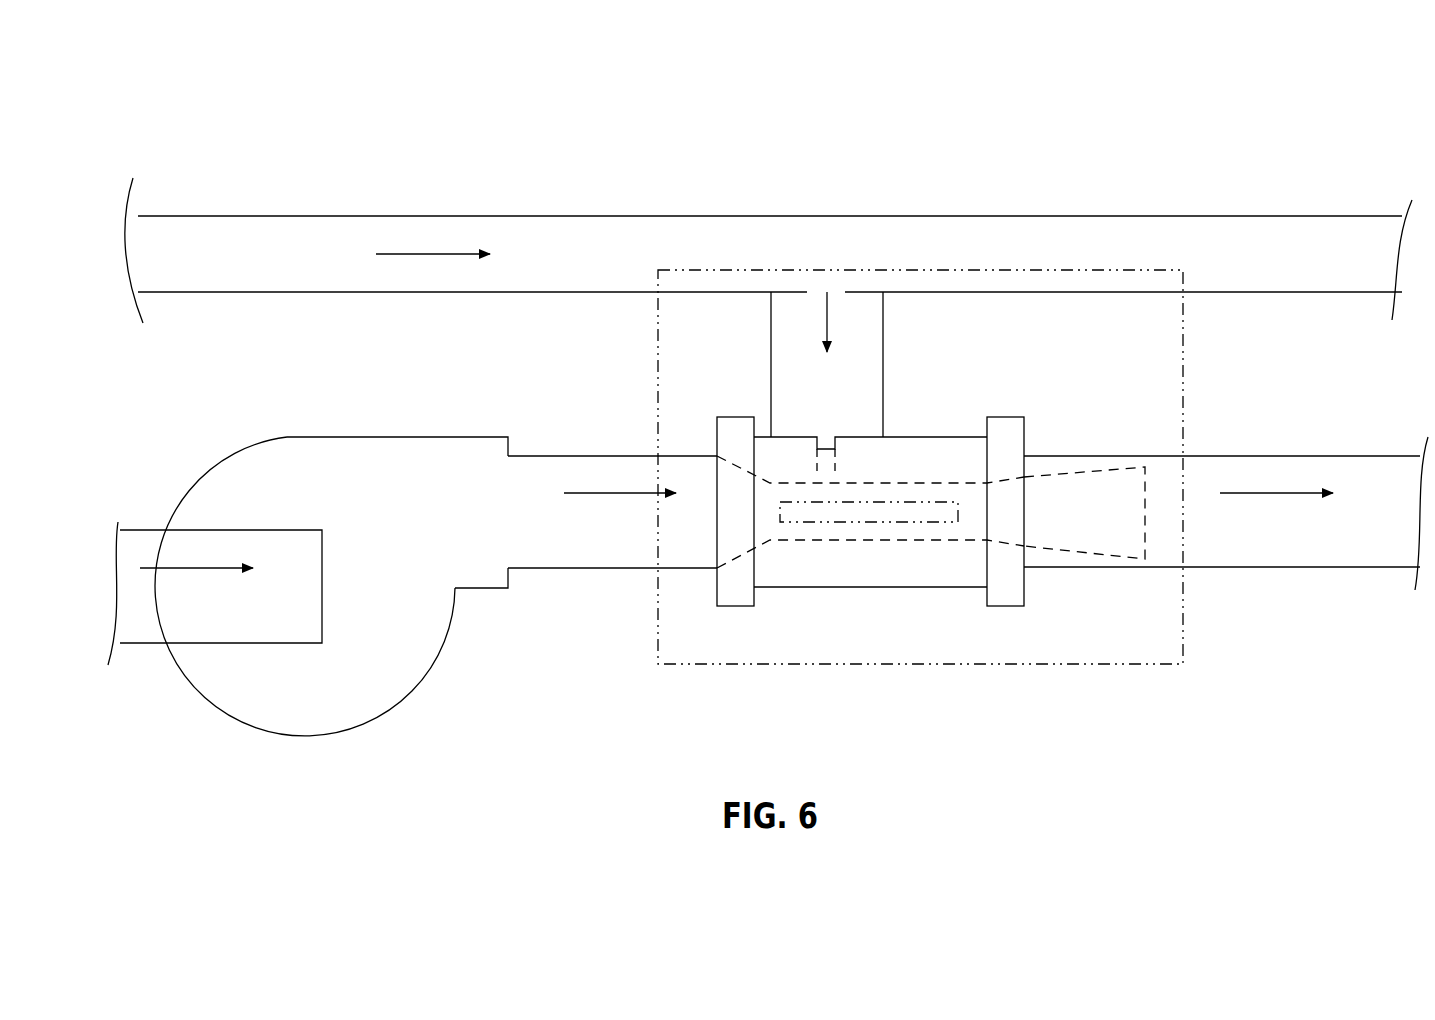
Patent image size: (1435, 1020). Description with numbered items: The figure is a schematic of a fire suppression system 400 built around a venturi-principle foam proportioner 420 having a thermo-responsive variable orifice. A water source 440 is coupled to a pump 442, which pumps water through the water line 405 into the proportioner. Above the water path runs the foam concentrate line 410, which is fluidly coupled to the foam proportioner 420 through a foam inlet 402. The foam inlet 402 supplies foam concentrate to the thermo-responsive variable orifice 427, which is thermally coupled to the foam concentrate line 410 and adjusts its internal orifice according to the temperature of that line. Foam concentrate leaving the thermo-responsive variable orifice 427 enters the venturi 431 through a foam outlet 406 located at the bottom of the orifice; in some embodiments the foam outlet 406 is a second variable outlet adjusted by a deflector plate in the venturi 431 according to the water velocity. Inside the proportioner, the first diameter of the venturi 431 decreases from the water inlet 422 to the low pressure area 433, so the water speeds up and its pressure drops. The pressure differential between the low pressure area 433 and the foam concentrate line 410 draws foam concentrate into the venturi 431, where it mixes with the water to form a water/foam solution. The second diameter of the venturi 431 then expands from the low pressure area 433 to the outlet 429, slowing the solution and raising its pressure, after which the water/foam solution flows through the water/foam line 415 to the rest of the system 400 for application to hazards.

The fire suppression system 400 is at (546, 160).
The foam inlet 402 is at (837, 292).
The water line 405 is at (545, 456).
The foam outlet 406 is at (828, 447).
The foam concentrate line 410 is at (1146, 215).
The water/foam line 415 is at (1268, 455).
The venturi-principle foam proportioner 420 is at (879, 501).
The water inlet 422 is at (713, 548).
The thermo-responsive variable orifice 427 is at (883, 368).
The outlet 429 is at (1145, 513).
The venturi 431 is at (937, 542).
The low pressure area 433 is at (808, 523).
The water source 440 is at (133, 645).
The pump 442 is at (243, 450).